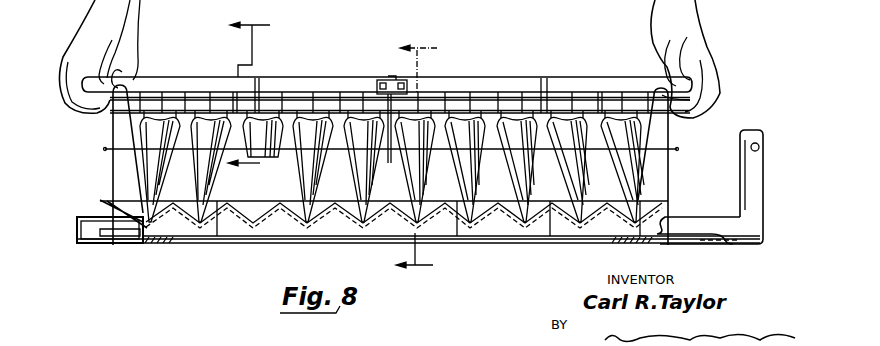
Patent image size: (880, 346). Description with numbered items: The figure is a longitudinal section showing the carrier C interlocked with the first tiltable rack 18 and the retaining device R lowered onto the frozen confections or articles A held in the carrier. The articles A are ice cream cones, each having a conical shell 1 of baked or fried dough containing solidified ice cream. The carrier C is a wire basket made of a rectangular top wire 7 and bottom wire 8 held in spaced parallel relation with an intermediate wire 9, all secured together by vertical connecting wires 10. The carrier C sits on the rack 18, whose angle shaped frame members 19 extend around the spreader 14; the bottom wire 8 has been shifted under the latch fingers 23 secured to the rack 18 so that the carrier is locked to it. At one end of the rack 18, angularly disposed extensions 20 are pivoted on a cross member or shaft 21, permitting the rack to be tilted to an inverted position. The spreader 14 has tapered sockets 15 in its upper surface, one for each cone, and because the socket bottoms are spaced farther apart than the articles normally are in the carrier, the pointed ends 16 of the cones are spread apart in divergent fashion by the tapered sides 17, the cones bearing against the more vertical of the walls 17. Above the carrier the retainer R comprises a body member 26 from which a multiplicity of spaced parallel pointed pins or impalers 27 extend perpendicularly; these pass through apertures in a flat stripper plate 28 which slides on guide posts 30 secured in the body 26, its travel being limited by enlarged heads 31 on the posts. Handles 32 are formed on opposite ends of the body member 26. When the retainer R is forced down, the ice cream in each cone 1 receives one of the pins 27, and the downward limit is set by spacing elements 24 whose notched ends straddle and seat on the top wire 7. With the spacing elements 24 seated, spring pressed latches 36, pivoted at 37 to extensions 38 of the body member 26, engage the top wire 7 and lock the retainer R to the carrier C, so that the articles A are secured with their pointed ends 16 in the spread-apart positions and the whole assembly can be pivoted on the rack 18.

The conical shell 1 is at (507, 158).
The top wire 7 is at (258, 78).
The bottom wire 8 is at (111, 243).
The intermediate wire 9 is at (92, 138).
The connecting wires 10 is at (542, 253).
The spreader 14 is at (123, 198).
The tapered sockets 15 is at (284, 199).
The pointed ends 16 is at (193, 210).
The tapered sides 17 is at (300, 218).
The first tiltable rack 18 is at (765, 163).
The angle shaped frame members 19 is at (78, 223).
The angularly disposed extensions 20 is at (760, 182).
The cross member or shaft 21 is at (757, 143).
The latch fingers 23 is at (100, 229).
The spacing elements 24 is at (228, 96).
The body member 26 is at (490, 80).
The pointed pins or impalers 27 is at (362, 104).
The stripper plate 28 is at (453, 118).
The guide posts 30 is at (601, 98).
The enlarged heads 31 is at (592, 162).
The handles 32 is at (88, 76).
The spring pressed latches 36 is at (390, 163).
The pivot 37 is at (378, 84).
The extensions 38 is at (397, 80).
The frozen confections or articles A is at (200, 123).
The retaining device R is at (283, 77).
The carrier C is at (669, 130).